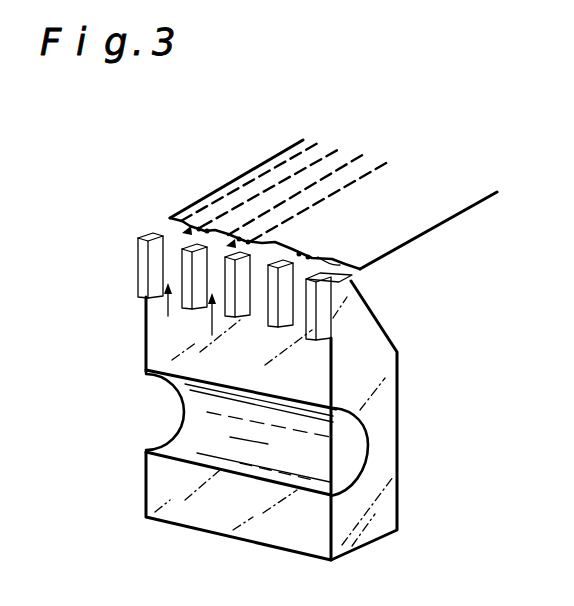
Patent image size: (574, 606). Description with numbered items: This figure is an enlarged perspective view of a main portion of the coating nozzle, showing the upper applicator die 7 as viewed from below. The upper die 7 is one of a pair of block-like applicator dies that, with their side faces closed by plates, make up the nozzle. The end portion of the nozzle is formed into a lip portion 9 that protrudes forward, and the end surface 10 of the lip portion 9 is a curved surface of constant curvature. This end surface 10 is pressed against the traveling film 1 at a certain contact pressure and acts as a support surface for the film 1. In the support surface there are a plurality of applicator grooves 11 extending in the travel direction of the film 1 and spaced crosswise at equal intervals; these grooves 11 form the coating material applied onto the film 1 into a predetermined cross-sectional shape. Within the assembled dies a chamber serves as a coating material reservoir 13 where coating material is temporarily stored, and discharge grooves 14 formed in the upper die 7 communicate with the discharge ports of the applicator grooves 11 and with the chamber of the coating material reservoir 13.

The film 1 is at (443, 210).
The upper applicator die 7 is at (383, 511).
The lip portion 9 is at (337, 304).
The end surface 10 is at (336, 280).
The applicator grooves 11 is at (331, 262).
The coating material reservoir 13 is at (337, 453).
The discharge grooves 14 is at (257, 307).